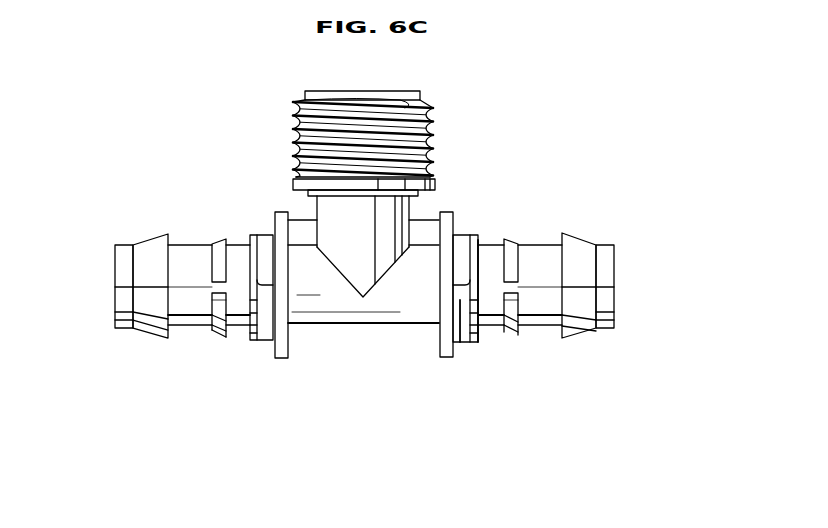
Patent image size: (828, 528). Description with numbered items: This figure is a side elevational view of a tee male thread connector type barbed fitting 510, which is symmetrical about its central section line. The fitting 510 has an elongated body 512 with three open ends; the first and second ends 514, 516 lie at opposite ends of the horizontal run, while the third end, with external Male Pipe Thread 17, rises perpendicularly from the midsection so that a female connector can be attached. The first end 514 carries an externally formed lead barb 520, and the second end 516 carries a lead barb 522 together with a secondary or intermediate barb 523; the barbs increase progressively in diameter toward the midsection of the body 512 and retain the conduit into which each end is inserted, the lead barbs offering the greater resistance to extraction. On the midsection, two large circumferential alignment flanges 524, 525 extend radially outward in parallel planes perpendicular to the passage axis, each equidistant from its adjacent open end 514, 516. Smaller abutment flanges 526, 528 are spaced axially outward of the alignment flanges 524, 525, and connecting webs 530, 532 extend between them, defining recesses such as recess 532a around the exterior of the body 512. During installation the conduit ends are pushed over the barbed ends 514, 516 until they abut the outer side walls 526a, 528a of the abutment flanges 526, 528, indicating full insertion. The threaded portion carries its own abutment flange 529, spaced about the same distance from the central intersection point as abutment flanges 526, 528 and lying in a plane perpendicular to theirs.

The threaded connector 17 is at (297, 101).
The fitting 510 is at (530, 147).
The elongated body 512 is at (542, 252).
The first open end 514 is at (118, 245).
The second open end 516 is at (606, 250).
The lead barb 520 is at (160, 238).
The lead barb 522 is at (570, 332).
The secondary barb 523 is at (507, 333).
The alignment flange 524 is at (290, 350).
The alignment flange 525 is at (443, 358).
The abutment flange 526 is at (245, 238).
The outer side wall 526a is at (222, 333).
The abutment flange 528 is at (473, 343).
The outer side wall 528a is at (486, 236).
The abutment flange 529 is at (437, 185).
The connecting web 530 is at (265, 238).
The connecting web 532 is at (463, 240).
The recess 532a is at (463, 327).